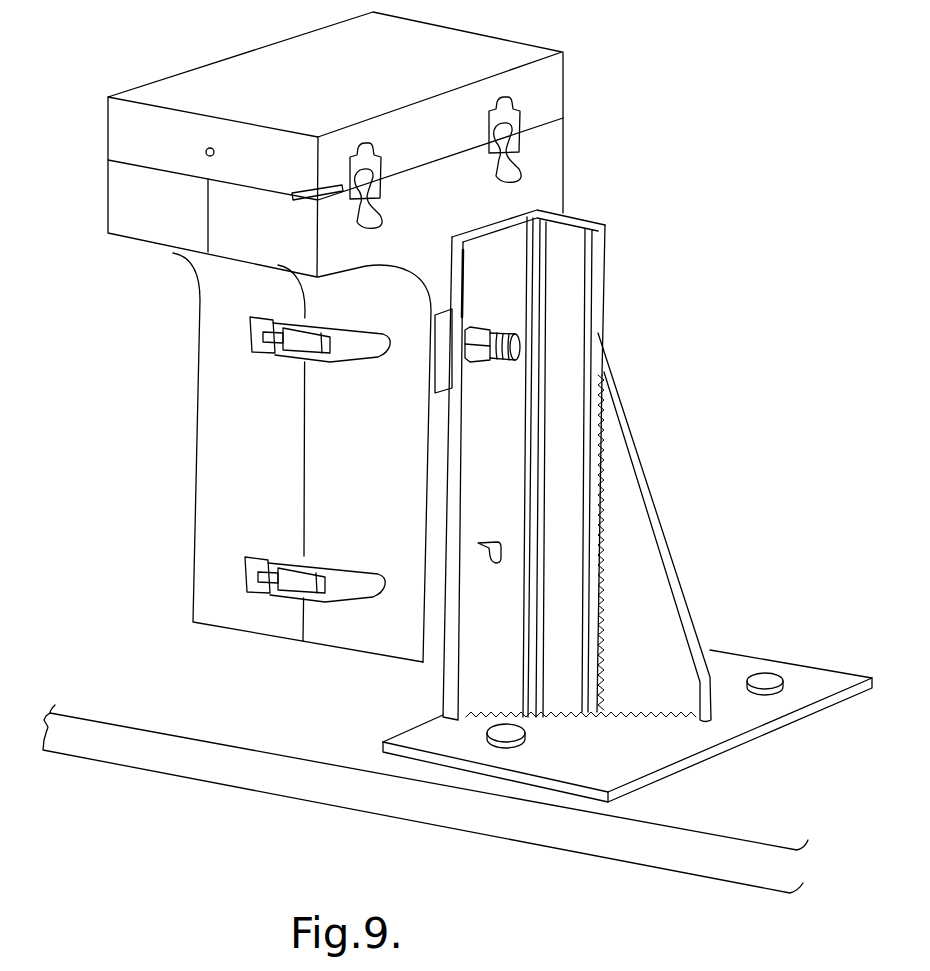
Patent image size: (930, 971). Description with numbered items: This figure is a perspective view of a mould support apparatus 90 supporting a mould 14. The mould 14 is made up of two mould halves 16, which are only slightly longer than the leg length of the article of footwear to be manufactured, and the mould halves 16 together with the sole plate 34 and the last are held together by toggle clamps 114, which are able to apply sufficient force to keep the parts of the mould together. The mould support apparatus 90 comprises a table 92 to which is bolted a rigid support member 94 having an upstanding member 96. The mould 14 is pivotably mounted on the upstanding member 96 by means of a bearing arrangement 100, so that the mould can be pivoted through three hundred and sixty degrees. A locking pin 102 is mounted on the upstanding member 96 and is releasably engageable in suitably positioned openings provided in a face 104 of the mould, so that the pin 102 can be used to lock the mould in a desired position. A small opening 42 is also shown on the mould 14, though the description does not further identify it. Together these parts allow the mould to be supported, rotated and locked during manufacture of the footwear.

The mould 14 is at (184, 322).
The mould half 16 is at (212, 470).
The sole plate 34 is at (245, 62).
The opening 42 is at (206, 152).
The mould support apparatus 90 is at (672, 417).
The table 92 is at (738, 812).
The rigid support member 94 is at (683, 522).
The upstanding member 96 is at (568, 307).
The bearing arrangement 100 is at (470, 312).
The locking pin 102 is at (486, 562).
The face of the mould 104 is at (436, 638).
The toggle clamp 114 is at (367, 143).